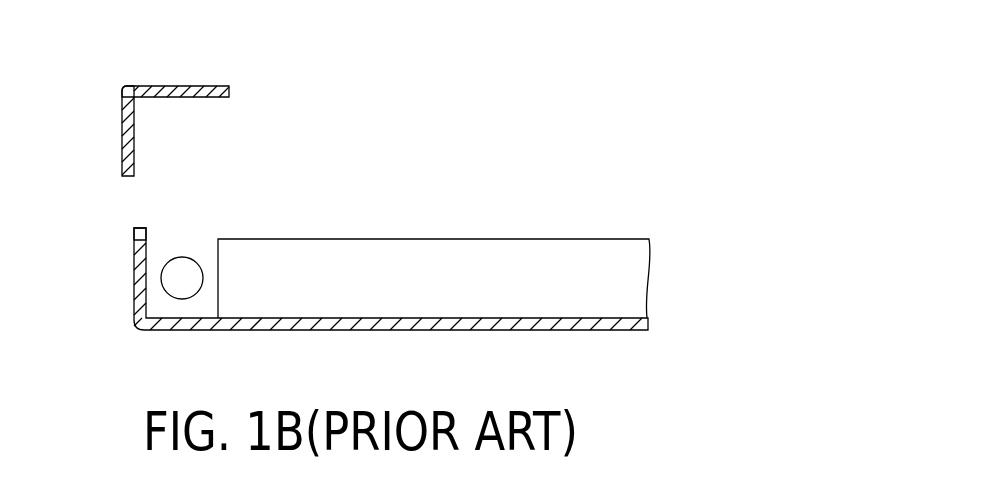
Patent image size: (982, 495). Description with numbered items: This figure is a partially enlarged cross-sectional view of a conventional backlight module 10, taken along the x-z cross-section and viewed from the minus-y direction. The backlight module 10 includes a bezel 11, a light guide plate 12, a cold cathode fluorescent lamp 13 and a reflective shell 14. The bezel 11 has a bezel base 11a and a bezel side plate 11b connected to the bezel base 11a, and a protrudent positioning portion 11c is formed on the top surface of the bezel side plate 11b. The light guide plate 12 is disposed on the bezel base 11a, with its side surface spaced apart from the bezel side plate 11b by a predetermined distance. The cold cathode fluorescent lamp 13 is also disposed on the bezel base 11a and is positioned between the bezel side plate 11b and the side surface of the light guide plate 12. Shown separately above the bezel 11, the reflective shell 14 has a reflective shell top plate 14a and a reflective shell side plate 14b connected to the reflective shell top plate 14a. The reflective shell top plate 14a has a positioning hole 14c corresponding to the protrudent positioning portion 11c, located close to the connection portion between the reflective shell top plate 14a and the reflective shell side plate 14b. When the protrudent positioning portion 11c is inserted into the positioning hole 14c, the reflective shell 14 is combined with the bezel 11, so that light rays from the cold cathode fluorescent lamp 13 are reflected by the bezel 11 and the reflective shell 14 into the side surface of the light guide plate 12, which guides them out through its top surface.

The backlight module 10 is at (667, 133).
The bezel 11 is at (391, 306).
The bezel base 11a is at (425, 330).
The bezel side plate 11b is at (138, 293).
The protrudent positioning portion 11c is at (134, 233).
The light guide plate 12 is at (397, 250).
The cold cathode fluorescent lamp 13 is at (183, 263).
The reflective shell 14 is at (139, 90).
The reflective shell top plate 14a is at (172, 86).
The reflective shell side plate 14b is at (123, 135).
The positioning hole 14c is at (138, 86).